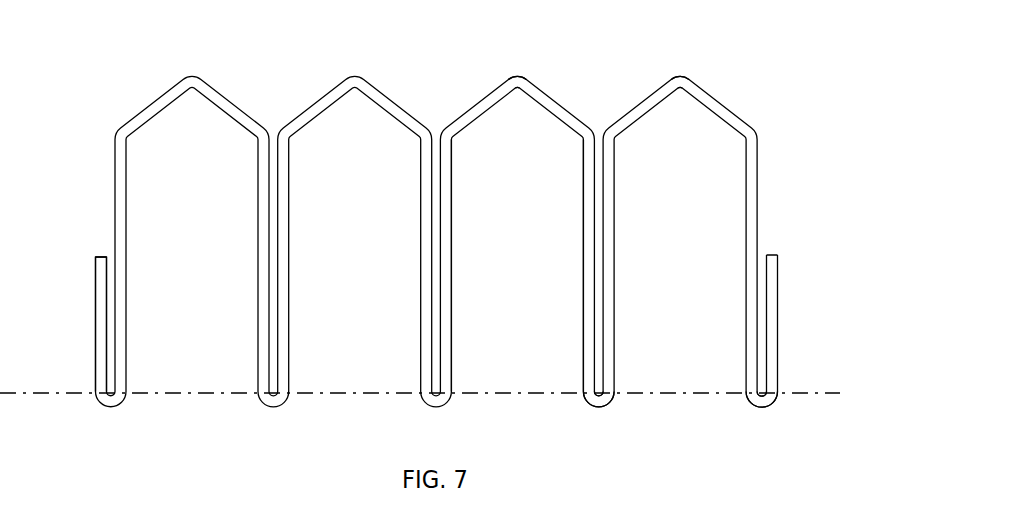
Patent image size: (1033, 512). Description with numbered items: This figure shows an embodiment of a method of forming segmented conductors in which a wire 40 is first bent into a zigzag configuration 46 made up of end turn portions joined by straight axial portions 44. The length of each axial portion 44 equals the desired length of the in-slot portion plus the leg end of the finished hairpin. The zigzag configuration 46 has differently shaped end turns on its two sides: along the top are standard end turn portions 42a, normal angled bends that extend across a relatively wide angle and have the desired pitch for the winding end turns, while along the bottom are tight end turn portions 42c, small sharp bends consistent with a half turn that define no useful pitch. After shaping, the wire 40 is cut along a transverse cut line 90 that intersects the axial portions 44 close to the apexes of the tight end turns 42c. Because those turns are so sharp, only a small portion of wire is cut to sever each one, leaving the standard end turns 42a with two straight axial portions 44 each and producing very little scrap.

The wire 40 is at (95, 268).
The standard end turn portions 42a is at (562, 88).
The tight end turn portions 42c is at (628, 405).
The axial portions 44 is at (452, 263).
The zigzag configuration 46 is at (828, 105).
The transverse cut line 90 is at (818, 392).